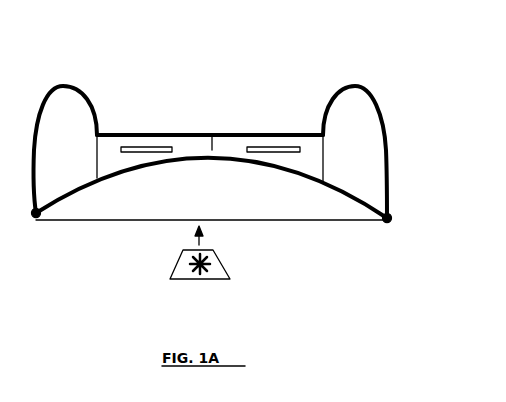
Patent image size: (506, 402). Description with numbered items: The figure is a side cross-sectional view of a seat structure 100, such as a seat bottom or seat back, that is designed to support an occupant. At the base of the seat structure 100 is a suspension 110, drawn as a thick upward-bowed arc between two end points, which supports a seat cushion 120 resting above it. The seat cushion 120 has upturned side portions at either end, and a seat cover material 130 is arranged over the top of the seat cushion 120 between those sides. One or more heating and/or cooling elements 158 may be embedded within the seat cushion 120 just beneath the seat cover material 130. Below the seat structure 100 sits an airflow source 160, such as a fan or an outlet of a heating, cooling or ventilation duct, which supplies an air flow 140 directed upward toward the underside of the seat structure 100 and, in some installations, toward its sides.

The seat structure 100 is at (423, 89).
The suspension 110 is at (68, 198).
The seat cushion 120 is at (70, 113).
The seat cover material 130 is at (260, 134).
The air flow 140 is at (199, 243).
The heating and/or cooling element 158 is at (137, 146).
The airflow source 160 is at (225, 269).